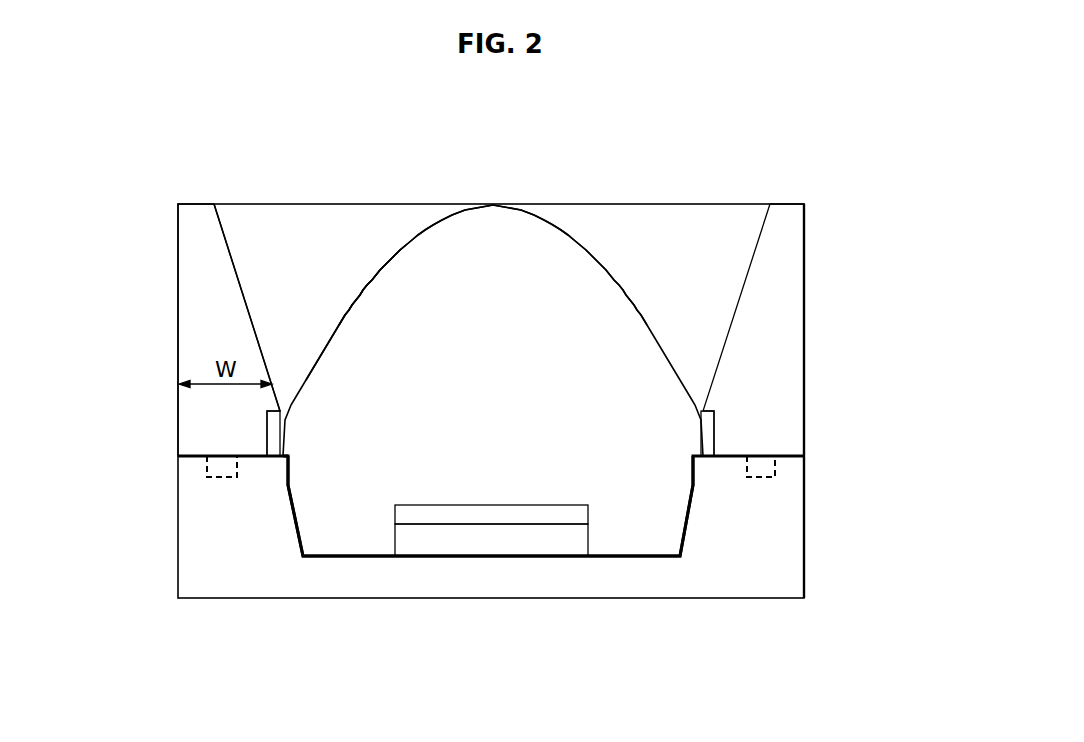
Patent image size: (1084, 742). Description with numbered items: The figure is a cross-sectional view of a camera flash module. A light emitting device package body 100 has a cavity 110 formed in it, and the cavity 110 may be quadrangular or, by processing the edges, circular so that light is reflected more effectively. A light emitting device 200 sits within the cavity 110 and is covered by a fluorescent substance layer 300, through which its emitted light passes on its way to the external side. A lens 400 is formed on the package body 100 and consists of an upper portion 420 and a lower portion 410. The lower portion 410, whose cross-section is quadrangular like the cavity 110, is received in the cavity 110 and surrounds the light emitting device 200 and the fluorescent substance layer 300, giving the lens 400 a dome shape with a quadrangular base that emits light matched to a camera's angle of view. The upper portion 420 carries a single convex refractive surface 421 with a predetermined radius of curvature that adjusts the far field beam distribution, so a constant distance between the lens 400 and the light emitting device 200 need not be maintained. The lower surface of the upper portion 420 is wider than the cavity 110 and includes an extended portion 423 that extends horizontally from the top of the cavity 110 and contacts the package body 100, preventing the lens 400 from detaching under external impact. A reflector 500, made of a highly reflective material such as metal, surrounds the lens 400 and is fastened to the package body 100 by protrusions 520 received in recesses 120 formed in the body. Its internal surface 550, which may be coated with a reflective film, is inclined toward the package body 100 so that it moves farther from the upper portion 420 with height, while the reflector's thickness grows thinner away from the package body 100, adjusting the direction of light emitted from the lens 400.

The light emitting device package body 100 is at (679, 618).
The cavity 110 is at (687, 513).
The recesses 120 is at (750, 470).
The light emitting device 200 is at (545, 538).
The fluorescent substance layer 300 is at (432, 518).
The lens 400 is at (590, 240).
The lower portion 410 is at (343, 530).
The upper portion 420 is at (606, 330).
The refractive surface 421 is at (382, 262).
The extended portion 423 is at (284, 457).
The reflector 500 is at (792, 192).
The protrusions 520 is at (754, 462).
The internal surface 550 is at (233, 262).